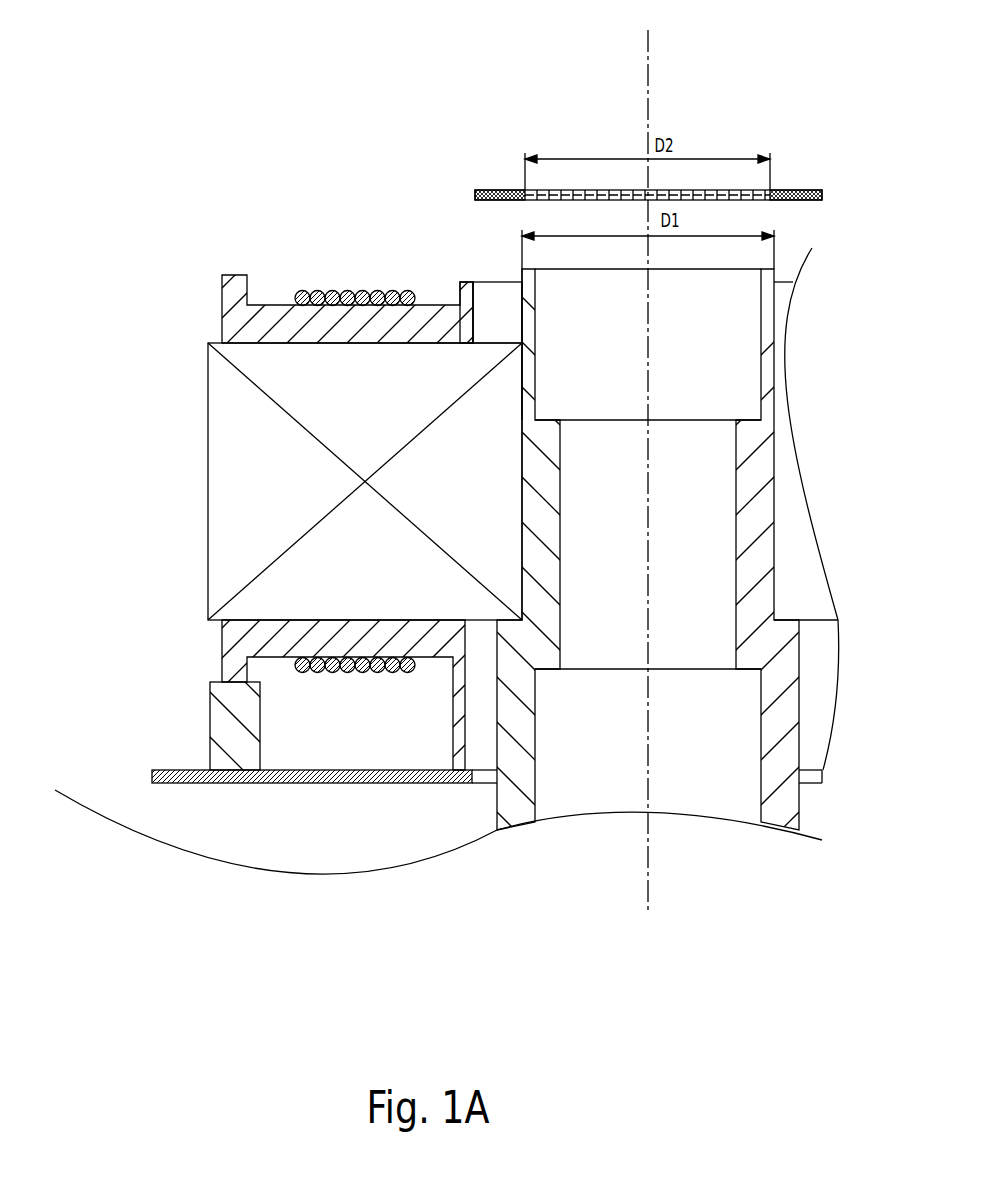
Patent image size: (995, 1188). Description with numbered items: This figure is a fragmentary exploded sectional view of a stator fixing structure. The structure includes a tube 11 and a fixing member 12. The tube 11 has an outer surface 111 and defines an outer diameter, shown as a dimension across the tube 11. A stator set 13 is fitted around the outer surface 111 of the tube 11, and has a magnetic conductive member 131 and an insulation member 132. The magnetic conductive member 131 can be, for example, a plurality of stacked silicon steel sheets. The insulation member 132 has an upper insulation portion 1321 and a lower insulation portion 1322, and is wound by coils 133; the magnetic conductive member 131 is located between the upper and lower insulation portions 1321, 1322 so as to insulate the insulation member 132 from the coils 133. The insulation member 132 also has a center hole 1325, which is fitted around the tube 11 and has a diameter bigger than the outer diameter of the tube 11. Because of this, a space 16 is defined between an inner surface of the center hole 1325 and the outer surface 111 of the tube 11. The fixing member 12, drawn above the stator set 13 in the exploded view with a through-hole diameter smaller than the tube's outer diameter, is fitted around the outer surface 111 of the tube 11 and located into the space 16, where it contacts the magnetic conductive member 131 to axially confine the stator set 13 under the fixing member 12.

The tube 11 is at (528, 280).
The outer surface 111 is at (515, 303).
The fixing member 12 is at (482, 190).
The stator set 13 is at (196, 410).
The magnetic conductive member 131 is at (258, 398).
The insulation member 132 is at (140, 523).
The upper insulation portion 1321 is at (220, 292).
The lower insulation portion 1322 is at (143, 695).
The center hole 1325 is at (470, 278).
The coils 133 is at (302, 290).
The space 16 is at (490, 297).